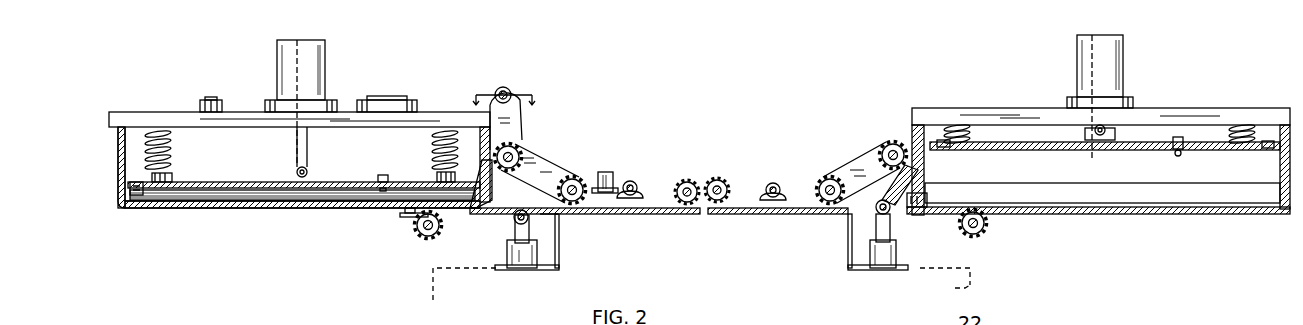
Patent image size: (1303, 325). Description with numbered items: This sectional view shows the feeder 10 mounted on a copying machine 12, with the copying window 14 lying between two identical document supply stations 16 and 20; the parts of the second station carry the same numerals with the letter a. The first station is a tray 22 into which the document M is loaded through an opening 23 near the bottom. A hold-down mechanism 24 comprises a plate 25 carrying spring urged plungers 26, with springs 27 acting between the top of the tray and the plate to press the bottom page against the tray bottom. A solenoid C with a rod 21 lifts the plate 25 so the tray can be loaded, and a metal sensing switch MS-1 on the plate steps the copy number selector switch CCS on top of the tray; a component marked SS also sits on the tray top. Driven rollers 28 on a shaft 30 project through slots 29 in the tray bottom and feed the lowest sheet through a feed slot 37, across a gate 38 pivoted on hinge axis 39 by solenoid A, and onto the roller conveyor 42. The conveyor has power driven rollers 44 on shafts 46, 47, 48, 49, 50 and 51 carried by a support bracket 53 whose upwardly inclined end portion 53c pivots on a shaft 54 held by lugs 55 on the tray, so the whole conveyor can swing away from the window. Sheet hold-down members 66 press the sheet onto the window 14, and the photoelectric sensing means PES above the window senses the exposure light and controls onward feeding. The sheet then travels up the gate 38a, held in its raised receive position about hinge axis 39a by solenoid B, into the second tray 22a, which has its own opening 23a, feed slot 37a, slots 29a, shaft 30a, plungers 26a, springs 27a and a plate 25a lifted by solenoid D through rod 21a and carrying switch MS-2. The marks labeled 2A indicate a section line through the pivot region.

The feeder 10 is at (570, 44).
The copying machine 12 is at (433, 286).
The copying window 14 is at (684, 214).
The document supply station 16 is at (234, 54).
The second document supply station 20 is at (1182, 48).
The rod 21 is at (305, 143).
The rod 21a is at (1119, 142).
The tray 22 is at (124, 200).
The tray 22a is at (1286, 206).
The opening 23 is at (146, 189).
The opening 23a is at (1204, 194).
The hold-down mechanism 24 is at (240, 96).
The plate 25 is at (262, 187).
The plate 25a is at (1042, 150).
The spring urged plungers 26 is at (162, 182).
The spring urged plungers 26a is at (945, 148).
The springs 27 is at (434, 136).
The springs 27a is at (1262, 98).
The driven rollers 28 is at (406, 228).
The slots 29 is at (402, 212).
The slots 29a is at (990, 186).
The shaft 30 is at (420, 244).
The shaft 30a is at (978, 226).
The feed slot 37 is at (484, 210).
The feed slot 37a is at (928, 200).
The gate 38 is at (557, 218).
The gate 38a is at (896, 216).
The hinge axis 39 is at (556, 216).
The hinge axis 39a is at (850, 218).
The power driven roller conveyor 42 is at (720, 150).
The power driven rollers 44 is at (565, 162).
The shaft 46 is at (508, 157).
The shaft 47 is at (578, 185).
The shaft 48 is at (687, 214).
The shaft 49 is at (718, 214).
The shaft 50 is at (772, 190).
The shaft 51 is at (897, 152).
The conveyor support bracket 53 is at (652, 185).
The upwardly inclined end portion 53c is at (522, 116).
The shaft 54 is at (503, 90).
The lugs 55 is at (510, 85).
The sheet hold-down members 66 is at (650, 214).
The solenoid A is at (550, 268).
The solenoid B is at (906, 266).
The solenoid C is at (322, 51).
The solenoid D is at (1122, 52).
The document M is at (210, 192).
The sensor switch SS is at (208, 99).
The copy number selector switch CCS is at (416, 84).
The metal sensing switch MS-1 is at (378, 176).
The metal sensing switch MS-2 is at (1200, 98).
The photoelectric sensing means PES is at (628, 168).
The section line 2A is at (503, 85).